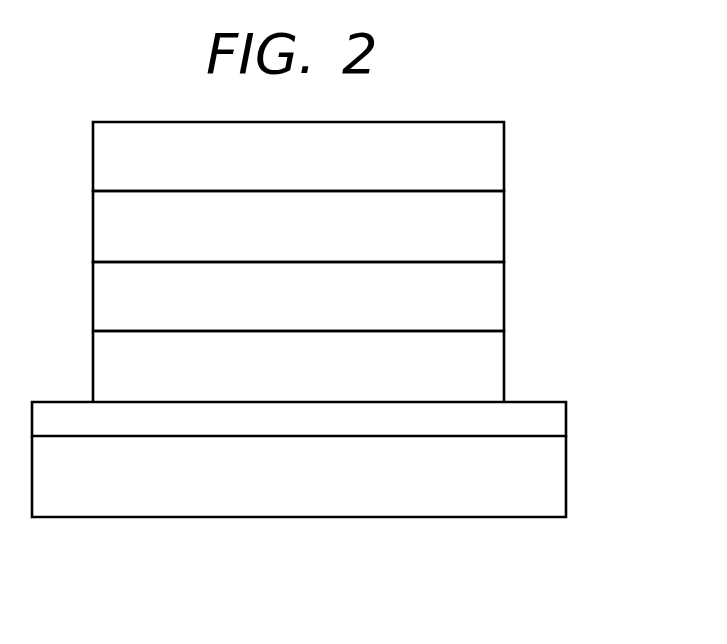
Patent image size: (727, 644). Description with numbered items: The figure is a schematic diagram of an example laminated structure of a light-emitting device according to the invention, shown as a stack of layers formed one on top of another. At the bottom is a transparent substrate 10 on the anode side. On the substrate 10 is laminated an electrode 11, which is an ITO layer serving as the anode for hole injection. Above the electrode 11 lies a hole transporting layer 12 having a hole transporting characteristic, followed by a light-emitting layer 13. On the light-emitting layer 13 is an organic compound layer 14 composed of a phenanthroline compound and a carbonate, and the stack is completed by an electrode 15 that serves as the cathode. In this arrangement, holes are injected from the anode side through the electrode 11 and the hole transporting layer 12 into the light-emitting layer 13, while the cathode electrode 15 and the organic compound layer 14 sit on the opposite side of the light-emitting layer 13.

The substrate 10 is at (557, 480).
The electrode 11 is at (557, 419).
The hole transporting layer 12 is at (495, 362).
The light-emitting layer 13 is at (495, 292).
The organic compound layer 14 is at (495, 223).
The electrode 15 is at (495, 153).